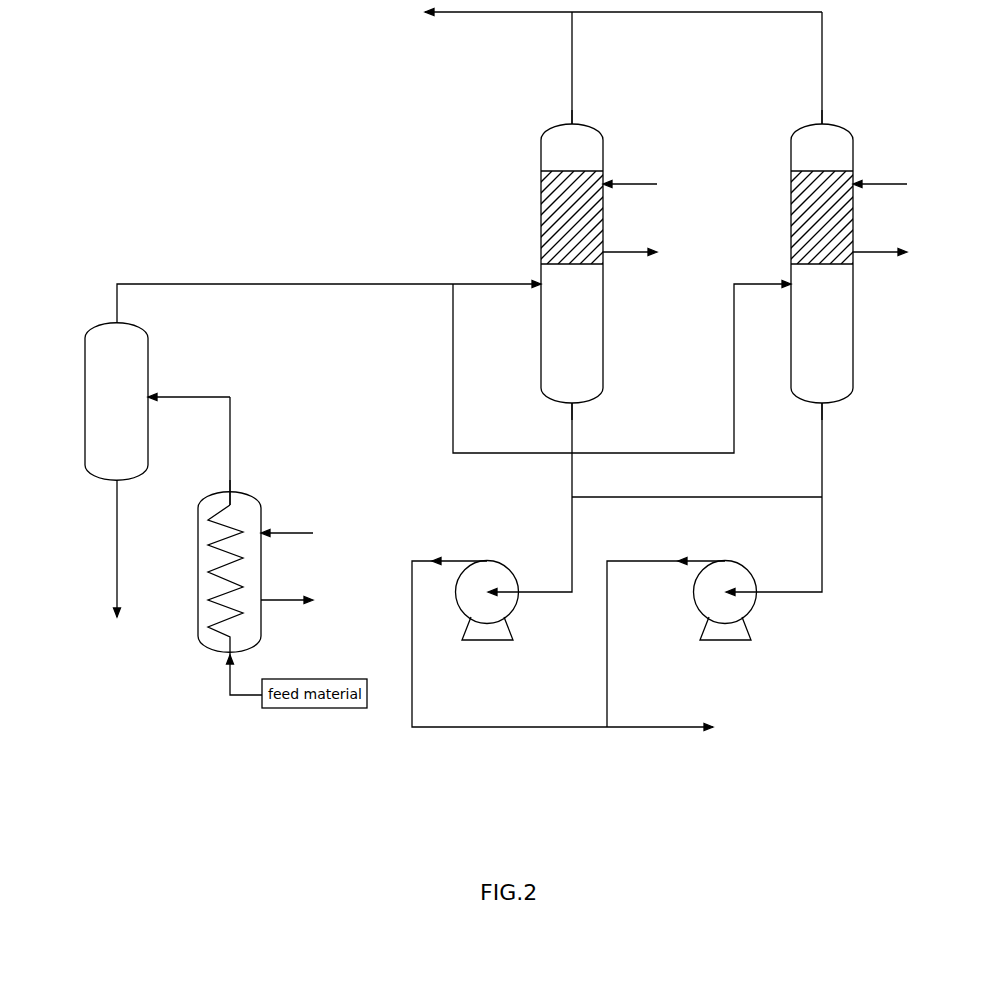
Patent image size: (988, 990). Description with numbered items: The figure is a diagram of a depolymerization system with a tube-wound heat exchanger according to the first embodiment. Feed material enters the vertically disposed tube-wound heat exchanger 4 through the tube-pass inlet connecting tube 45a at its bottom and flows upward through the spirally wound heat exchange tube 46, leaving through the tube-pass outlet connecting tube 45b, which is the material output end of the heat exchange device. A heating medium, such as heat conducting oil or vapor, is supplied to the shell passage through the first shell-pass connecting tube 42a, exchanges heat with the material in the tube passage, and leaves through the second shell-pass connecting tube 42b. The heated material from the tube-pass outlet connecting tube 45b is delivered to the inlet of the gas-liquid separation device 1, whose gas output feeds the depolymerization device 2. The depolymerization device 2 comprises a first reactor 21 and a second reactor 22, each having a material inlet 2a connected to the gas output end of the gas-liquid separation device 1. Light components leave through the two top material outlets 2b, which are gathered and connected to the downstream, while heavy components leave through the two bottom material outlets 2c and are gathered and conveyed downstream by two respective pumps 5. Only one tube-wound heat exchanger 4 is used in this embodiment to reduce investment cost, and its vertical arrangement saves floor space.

The gas-liquid separation device 1 is at (100, 428).
The depolymerization device 2 is at (696, 229).
The first reactor 21 is at (590, 150).
The second reactor 22 is at (800, 140).
The material inlet 2a is at (541, 284).
The top material outlet 2b is at (572, 123).
The bottom material outlet 2c is at (575, 405).
The tube-wound heat exchanger 4 is at (250, 576).
The first shell-pass connecting tube 42a is at (262, 530).
The second shell-pass connecting tube 42b is at (262, 600).
The tube-pass inlet connecting tube 45a is at (230, 655).
The tube-pass outlet connecting tube 45b is at (230, 490).
The heat exchange tube 46 is at (215, 578).
The pump 5 is at (508, 605).